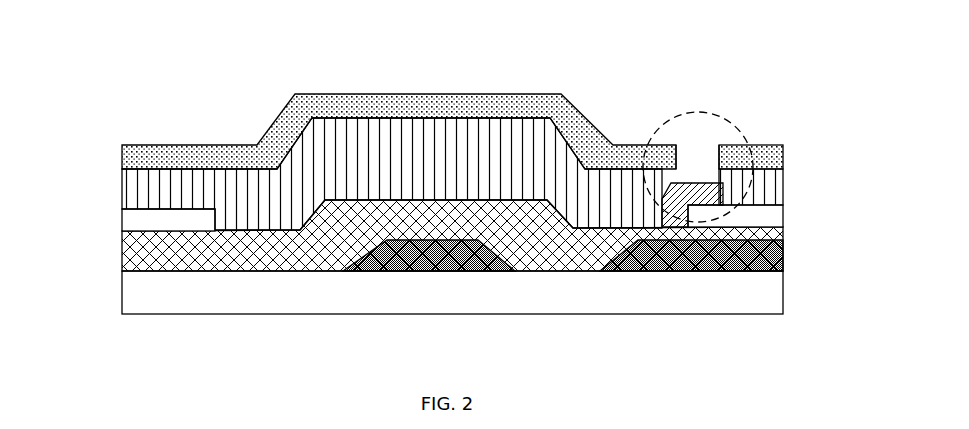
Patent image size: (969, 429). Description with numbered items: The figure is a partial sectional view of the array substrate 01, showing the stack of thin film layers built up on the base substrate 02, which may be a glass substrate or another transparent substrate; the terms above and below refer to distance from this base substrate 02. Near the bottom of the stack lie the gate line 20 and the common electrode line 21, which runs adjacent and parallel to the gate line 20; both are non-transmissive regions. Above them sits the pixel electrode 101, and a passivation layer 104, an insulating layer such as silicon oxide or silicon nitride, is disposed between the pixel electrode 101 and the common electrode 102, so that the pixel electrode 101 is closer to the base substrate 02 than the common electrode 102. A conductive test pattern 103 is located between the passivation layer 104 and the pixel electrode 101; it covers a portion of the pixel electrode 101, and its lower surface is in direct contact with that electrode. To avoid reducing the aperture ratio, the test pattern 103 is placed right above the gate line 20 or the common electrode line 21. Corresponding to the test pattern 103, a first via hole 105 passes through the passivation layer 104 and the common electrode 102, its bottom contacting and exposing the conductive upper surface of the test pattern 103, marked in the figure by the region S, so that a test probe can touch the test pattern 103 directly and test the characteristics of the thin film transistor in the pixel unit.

The array substrate 01 is at (60, 48).
The base substrate 02 is at (137, 300).
The gate line 20 is at (423, 253).
The common electrode line 21 is at (727, 239).
The pixel electrode 101 is at (135, 219).
The common electrode 102 is at (133, 160).
The test pattern 103 is at (710, 193).
The passivation layer 104 is at (133, 190).
The first via hole 105 is at (650, 137).
The contact region S is at (696, 182).